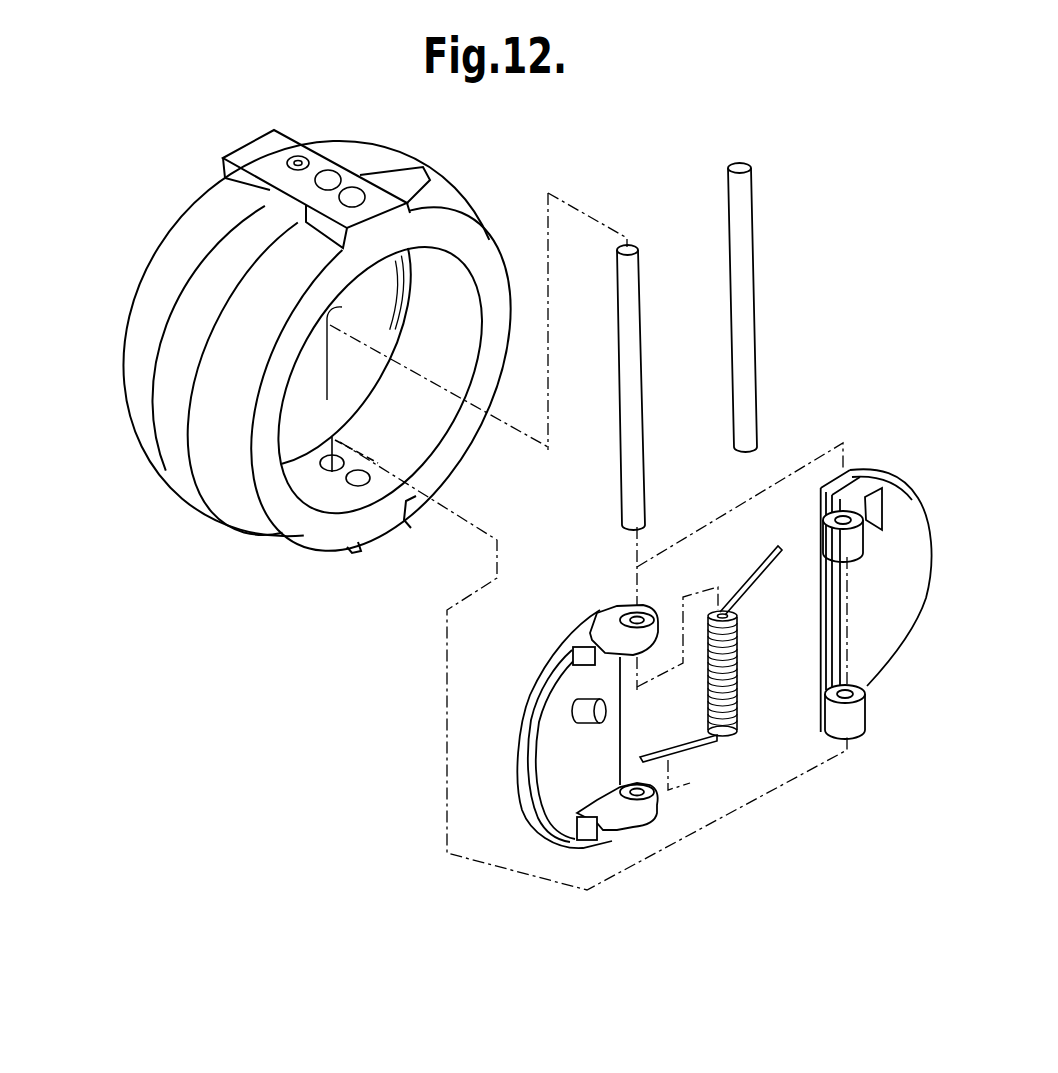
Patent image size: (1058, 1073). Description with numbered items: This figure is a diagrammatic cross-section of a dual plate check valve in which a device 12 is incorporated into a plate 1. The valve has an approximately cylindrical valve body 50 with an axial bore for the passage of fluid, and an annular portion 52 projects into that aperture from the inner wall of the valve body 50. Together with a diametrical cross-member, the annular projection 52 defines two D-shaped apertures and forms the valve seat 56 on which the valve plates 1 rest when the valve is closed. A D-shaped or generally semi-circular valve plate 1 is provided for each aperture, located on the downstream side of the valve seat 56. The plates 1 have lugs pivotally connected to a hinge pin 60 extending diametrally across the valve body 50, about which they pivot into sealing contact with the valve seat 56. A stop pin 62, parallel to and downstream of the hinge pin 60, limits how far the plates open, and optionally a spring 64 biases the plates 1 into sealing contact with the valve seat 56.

The valve body 50 is at (133, 372).
The annular portion 52 is at (428, 256).
The valve seat 56 is at (297, 432).
The hinge pin 60 is at (627, 290).
The stop pin 62 is at (745, 395).
The spring 64 is at (727, 677).
The valve plate 1 is at (557, 707).
The device 12 is at (584, 726).